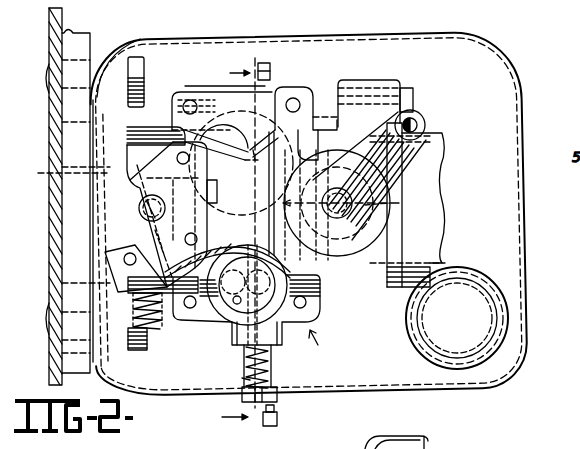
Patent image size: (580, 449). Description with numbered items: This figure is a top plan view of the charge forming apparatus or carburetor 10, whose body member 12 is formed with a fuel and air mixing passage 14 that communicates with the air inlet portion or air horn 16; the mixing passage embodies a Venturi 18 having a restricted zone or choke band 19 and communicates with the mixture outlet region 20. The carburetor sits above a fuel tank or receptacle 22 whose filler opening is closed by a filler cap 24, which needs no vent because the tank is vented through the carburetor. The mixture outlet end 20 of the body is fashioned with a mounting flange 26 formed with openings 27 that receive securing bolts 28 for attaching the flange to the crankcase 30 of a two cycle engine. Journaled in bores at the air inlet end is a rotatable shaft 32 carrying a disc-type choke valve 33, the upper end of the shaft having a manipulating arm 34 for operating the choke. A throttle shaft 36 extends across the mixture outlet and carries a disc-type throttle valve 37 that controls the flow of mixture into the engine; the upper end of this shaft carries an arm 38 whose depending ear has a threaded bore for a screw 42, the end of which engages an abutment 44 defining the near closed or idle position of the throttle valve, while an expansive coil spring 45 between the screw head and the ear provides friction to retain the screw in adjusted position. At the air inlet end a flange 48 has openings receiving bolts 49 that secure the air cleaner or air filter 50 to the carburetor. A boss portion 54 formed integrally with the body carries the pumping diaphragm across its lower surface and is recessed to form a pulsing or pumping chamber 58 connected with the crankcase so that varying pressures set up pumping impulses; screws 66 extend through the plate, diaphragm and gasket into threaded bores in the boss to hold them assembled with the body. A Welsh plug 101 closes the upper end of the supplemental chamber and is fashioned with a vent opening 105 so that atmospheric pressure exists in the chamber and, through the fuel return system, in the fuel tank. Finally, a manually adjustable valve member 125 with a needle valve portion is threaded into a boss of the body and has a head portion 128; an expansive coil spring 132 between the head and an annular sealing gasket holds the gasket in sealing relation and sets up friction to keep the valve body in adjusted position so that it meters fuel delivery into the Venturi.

The carburetor or charge forming apparatus 10 is at (325, 342).
The body member 12 is at (305, 140).
The fuel and air mixing passage 14 is at (228, 150).
The air inlet portion or air horn 16 is at (340, 135).
The Venturi 18 is at (272, 140).
The restricted zone or choke band 19 is at (256, 175).
The mixture outlet region 20 is at (152, 126).
The fuel tank or receptacle 22 is at (308, 213).
The filler cap 24 is at (457, 318).
The mounting flange 26 is at (121, 43).
The openings 27 is at (160, 27).
The securing bolts 28 is at (145, 66).
The crankcase 30 is at (74, 31).
The rotatable shaft 32 is at (337, 210).
The choke valve 33 is at (390, 204).
The manipulating arm 34 is at (394, 178).
The throttle shaft 36 is at (143, 201).
The throttle valve 37 is at (62, 175).
The throttle arm 38 is at (201, 223).
The screw 42 is at (158, 328).
The abutment 44 is at (108, 257).
The expansive coil spring 45 is at (226, 312).
The flange 48 is at (363, 80).
The bolts 49 is at (414, 90).
The air cleaner or air filter 50 is at (443, 131).
The boss portion 54 is at (287, 90).
The pulsing or pumping chamber 58 is at (248, 116).
The screws 66 is at (190, 100).
The Welsh plug 101 is at (277, 340).
The vent opening 105 is at (236, 304).
The manually adjustable valve member 125 is at (243, 378).
The head portion 128 is at (278, 397).
The expansive coil spring 132 is at (272, 364).